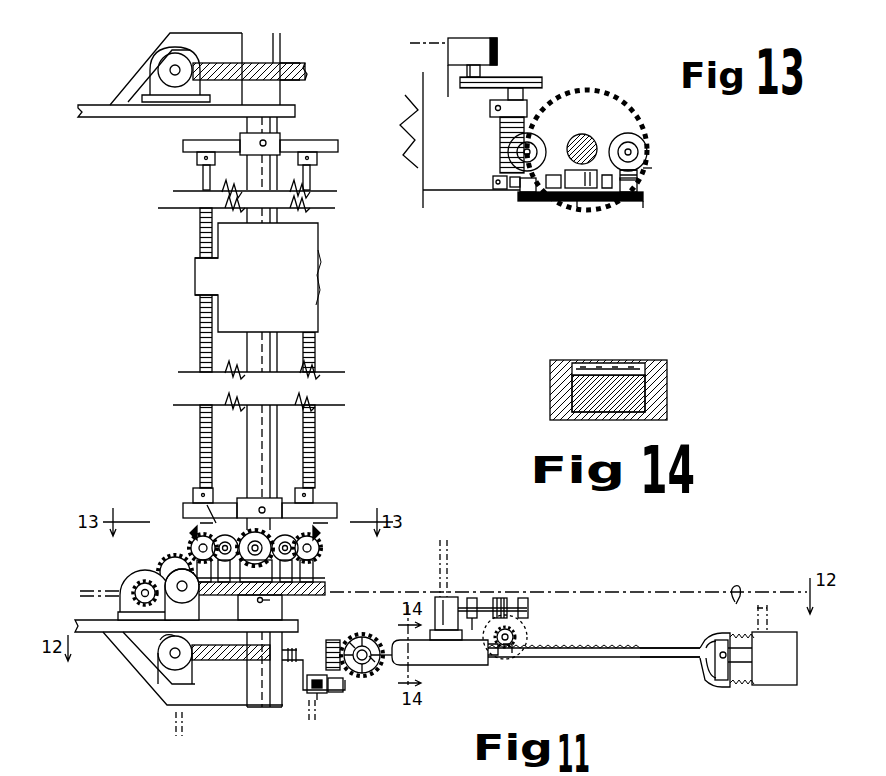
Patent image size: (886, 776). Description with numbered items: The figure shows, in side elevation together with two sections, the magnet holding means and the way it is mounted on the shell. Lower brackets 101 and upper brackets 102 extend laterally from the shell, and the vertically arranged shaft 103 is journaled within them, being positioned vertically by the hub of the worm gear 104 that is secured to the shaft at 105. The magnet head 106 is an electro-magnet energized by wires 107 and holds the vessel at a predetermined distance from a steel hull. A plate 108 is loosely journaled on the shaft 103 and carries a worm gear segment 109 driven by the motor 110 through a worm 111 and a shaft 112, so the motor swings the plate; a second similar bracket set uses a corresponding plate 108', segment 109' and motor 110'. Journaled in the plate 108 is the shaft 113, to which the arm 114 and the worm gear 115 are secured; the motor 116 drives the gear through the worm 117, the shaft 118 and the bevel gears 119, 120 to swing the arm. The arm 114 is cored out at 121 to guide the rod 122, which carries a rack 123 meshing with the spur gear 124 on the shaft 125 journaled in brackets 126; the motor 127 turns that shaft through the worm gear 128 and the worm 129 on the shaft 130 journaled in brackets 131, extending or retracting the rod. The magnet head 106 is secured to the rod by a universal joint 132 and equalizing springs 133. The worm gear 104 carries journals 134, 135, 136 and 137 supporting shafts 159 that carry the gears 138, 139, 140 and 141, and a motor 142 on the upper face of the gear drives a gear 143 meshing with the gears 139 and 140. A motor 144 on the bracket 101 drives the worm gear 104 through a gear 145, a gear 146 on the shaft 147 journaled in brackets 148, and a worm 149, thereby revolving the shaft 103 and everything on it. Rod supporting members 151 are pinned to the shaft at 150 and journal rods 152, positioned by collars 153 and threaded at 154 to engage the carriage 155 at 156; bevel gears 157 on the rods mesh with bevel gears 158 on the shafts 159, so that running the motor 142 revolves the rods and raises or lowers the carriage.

In FIG. 11, the lower bracket 101 is at (143, 668).
In FIG. 11, the upper bracket 102 is at (133, 112).
In FIG. 11, the shaft 103 is at (262, 372).
In FIG. 13, the shaft 103 is at (590, 138).
In FIG. 11, the worm gear 104 is at (325, 585).
In FIG. 13, the worm gear 104 is at (588, 97).
In FIG. 11, the securing point 105 is at (282, 603).
In FIG. 11, the magnet head 106 is at (783, 673).
In FIG. 11, the wires 107 is at (735, 586).
In FIG. 11, the plate 108 is at (308, 700).
In FIG. 11, the bar 108' is at (307, 56).
In FIG. 11, the worm gear segment 109 is at (231, 697).
In FIG. 11, the shaft 109' is at (250, 43).
In FIG. 11, the motor 110 is at (190, 689).
In FIG. 11, the bearing bracket 110' is at (170, 69).
In FIG. 11, the worm 111 is at (157, 640).
In FIG. 11, the shaft 112 is at (173, 657).
In FIG. 11, the shaft 113 is at (375, 638).
In FIG. 11, the arm 114 is at (460, 655).
In FIG. 14, the arm 114 is at (555, 385).
In FIG. 11, the worm gear 115 is at (372, 677).
In FIG. 11, the motor 116 is at (317, 695).
In FIG. 11, the worm 117 is at (353, 638).
In FIG. 11, the shaft 118 is at (317, 655).
In FIG. 11, the bevel gear 119 is at (343, 690).
In FIG. 11, the bevel gear 120 is at (332, 693).
In FIG. 14, the cored-out portion 121 is at (647, 360).
In FIG. 11, the rod 122 is at (638, 660).
In FIG. 14, the rod 122 is at (667, 396).
In FIG. 11, the rack 123 is at (563, 650).
In FIG. 14, the rack 123 is at (592, 368).
In FIG. 11, the spur gear 124 is at (525, 623).
In FIG. 11, the shaft 125 is at (518, 660).
In FIG. 11, the bracket 126 is at (493, 652).
In FIG. 11, the motor 127 is at (440, 603).
In FIG. 11, the worm gear 128 is at (527, 635).
In FIG. 11, the worm 129 is at (507, 603).
In FIG. 11, the shaft 130 is at (480, 607).
In FIG. 11, the bracket 131 is at (470, 600).
In FIG. 11, the universal joint 132 is at (712, 685).
In FIG. 11, the equalizing spring 133 is at (742, 688).
In FIG. 11, the journal 134 is at (312, 577).
In FIG. 13, the journal 134 is at (637, 183).
In FIG. 11, the journal 135 is at (320, 570).
In FIG. 13, the journal 135 is at (637, 133).
In FIG. 13, the journal 136 is at (555, 175).
In FIG. 13, the journal 137 is at (502, 190).
In FIG. 11, the gear 138 is at (323, 543).
In FIG. 13, the gear 138 is at (643, 202).
In FIG. 11, the gear 139 is at (290, 537).
In FIG. 13, the gear 139 is at (620, 202).
In FIG. 11, the gear 140 is at (220, 510).
In FIG. 13, the gear 140 is at (553, 200).
In FIG. 11, the gear 141 is at (190, 546).
In FIG. 13, the gear 141 is at (530, 200).
In FIG. 13, the motor 142 is at (577, 207).
In FIG. 11, the gear 143 is at (228, 542).
In FIG. 13, the gear 143 is at (587, 200).
In FIG. 11, the motor 144 is at (133, 578).
In FIG. 13, the motor 144 is at (477, 45).
In FIG. 11, the gear 145 is at (137, 595).
In FIG. 13, the gear 145 is at (468, 85).
In FIG. 11, the gear 146 is at (160, 566).
In FIG. 13, the gear 146 is at (517, 77).
In FIG. 11, the shaft 147 is at (184, 590).
In FIG. 13, the shaft 147 is at (537, 88).
In FIG. 13, the bracket 148 is at (490, 108).
In FIG. 13, the worm 149 is at (500, 143).
In FIG. 11, the pin 150 is at (282, 140).
In FIG. 11, the rod supporting member 151 is at (320, 147).
In FIG. 11, the rod 152 is at (203, 171).
In FIG. 13, the rod 152 is at (533, 147).
In FIG. 11, the collar 153 is at (198, 158).
In FIG. 11, the threaded portion 154 is at (200, 339).
In FIG. 11, the carriage 155 is at (258, 277).
In FIG. 11, the threaded engagement 156 is at (217, 272).
In FIG. 11, the bevel gear 157 is at (192, 523).
In FIG. 13, the bevel gear 157 is at (643, 155).
In FIG. 11, the bevel gear 158 is at (190, 533).
In FIG. 13, the bevel gear 158 is at (643, 168).
In FIG. 13, the shaft 159 is at (640, 191).